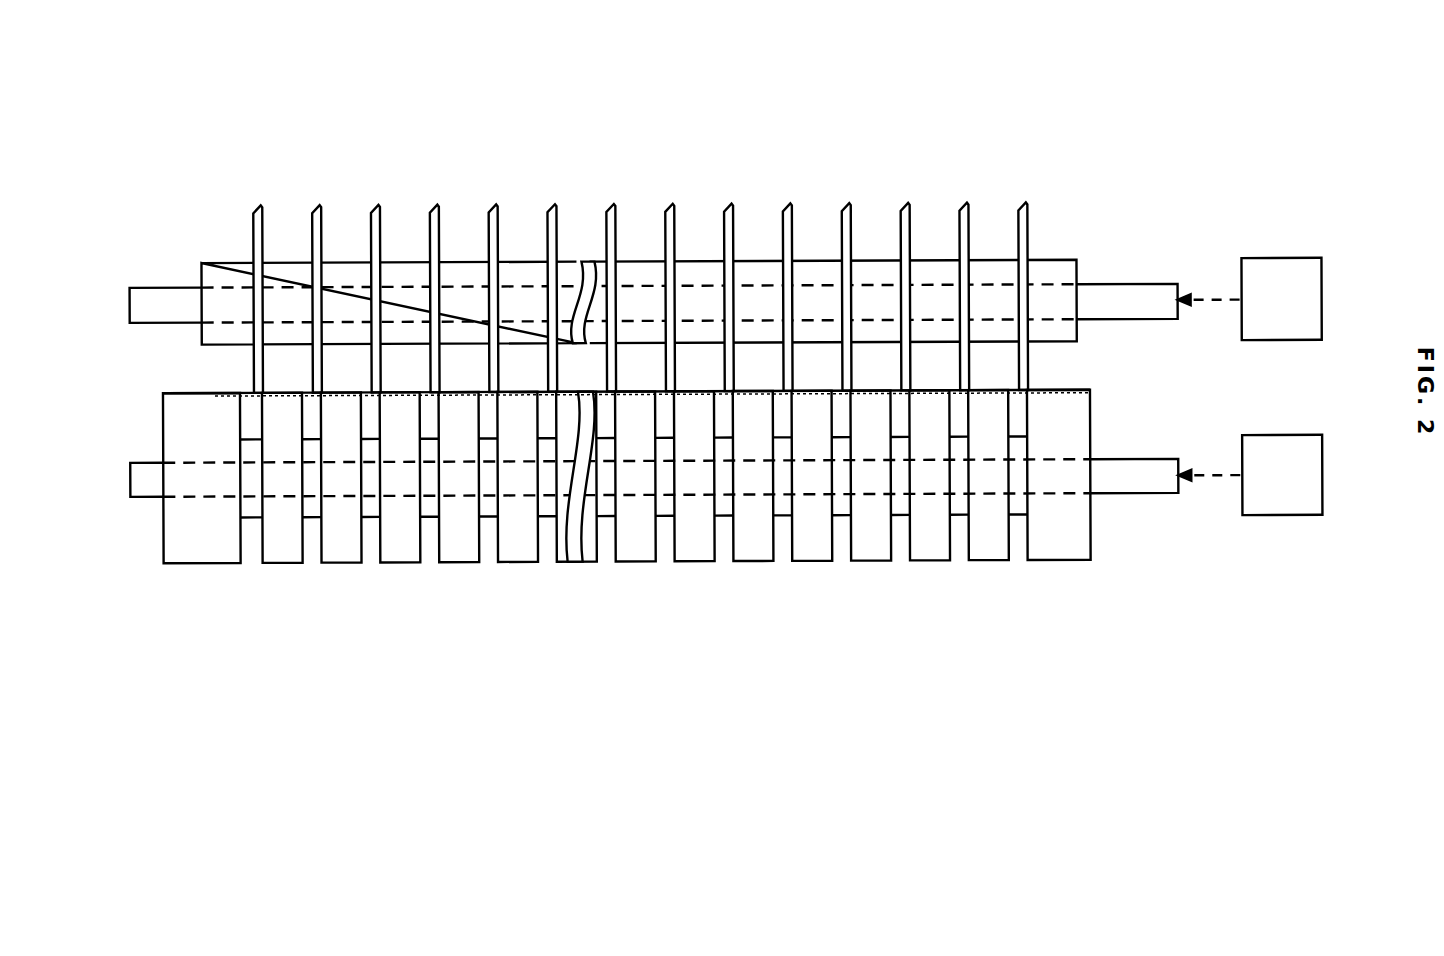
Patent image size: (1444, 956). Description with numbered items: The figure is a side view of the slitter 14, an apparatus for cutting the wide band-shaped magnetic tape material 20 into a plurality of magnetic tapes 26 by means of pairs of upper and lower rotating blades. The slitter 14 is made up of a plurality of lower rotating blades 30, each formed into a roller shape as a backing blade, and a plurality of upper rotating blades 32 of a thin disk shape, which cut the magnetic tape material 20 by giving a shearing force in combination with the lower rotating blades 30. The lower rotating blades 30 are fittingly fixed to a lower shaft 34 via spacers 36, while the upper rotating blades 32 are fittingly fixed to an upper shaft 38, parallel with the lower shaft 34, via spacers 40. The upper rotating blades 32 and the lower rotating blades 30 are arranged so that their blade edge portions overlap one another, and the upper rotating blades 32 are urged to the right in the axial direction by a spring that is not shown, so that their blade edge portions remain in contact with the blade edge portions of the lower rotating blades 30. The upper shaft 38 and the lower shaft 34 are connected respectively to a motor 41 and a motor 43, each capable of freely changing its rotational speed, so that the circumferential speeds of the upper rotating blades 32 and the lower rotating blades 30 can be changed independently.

The slitter 14 is at (675, 121).
The magnetic tape material 20 is at (625, 490).
The magnetic tape 26 is at (288, 391).
The lower rotating blade 30 is at (282, 562).
The upper rotating blade 32 is at (263, 208).
The lower shaft 34 is at (1140, 496).
The spacer 36 is at (900, 517).
The upper shaft 38 is at (1142, 284).
The spacer 40 is at (815, 260).
The motor 41 is at (1283, 259).
The motor 43 is at (1282, 518).